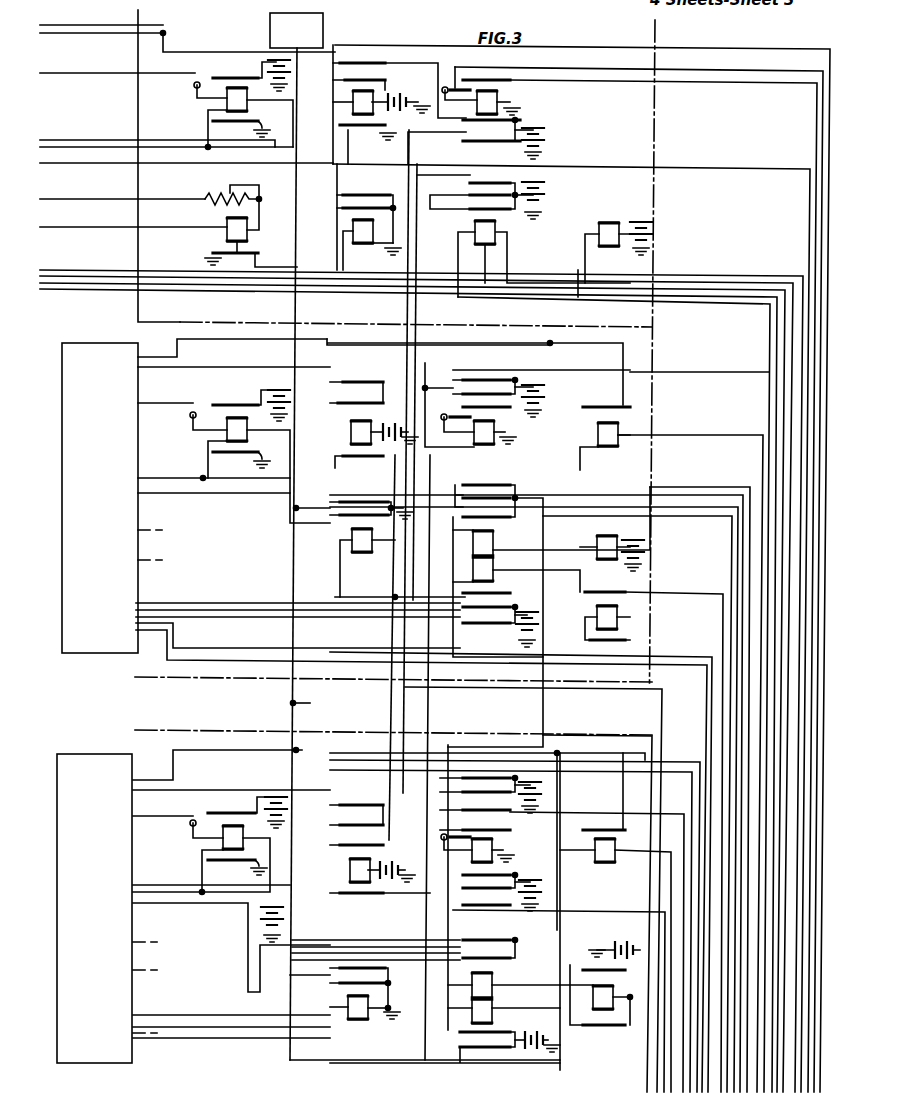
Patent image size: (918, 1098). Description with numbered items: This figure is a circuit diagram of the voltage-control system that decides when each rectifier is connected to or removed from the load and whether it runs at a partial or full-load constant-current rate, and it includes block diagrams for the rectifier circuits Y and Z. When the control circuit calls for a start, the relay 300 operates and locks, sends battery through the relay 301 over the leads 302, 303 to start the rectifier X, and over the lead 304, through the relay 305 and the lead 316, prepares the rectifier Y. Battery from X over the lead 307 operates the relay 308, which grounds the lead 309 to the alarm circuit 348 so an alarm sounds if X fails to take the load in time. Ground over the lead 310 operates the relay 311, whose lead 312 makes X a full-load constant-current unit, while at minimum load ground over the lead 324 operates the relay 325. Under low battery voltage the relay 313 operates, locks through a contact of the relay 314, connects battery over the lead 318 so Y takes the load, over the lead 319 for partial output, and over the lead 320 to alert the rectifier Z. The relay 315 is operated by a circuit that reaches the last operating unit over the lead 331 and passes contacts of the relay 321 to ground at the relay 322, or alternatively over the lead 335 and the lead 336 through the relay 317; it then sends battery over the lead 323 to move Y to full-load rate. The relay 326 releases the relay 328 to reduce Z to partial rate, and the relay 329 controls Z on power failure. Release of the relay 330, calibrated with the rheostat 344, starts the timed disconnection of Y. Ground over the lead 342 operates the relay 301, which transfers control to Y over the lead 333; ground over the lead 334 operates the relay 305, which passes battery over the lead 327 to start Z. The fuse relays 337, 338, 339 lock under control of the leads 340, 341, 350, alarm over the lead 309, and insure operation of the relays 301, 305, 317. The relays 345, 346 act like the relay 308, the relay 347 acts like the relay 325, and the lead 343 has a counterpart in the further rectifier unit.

The relay 300 is at (497, 100).
The relay 301 is at (372, 95).
The lead 302 is at (118, 34).
The lead 303 is at (72, 27).
The lead 304 is at (405, 317).
The relay 305 is at (351, 428).
The lead 307 is at (88, 270).
The relay 308 is at (350, 217).
The lead 309 is at (297, 193).
The lead 310 is at (168, 283).
The relay 311 is at (496, 232).
The lead 312 is at (126, 276).
The relay 313 is at (494, 432).
The relay 314 is at (608, 447).
The relay 315 is at (493, 548).
The lead 316 is at (218, 367).
The relay 317 is at (368, 866).
The lead 318 is at (278, 343).
The lead 319 is at (245, 660).
The lead 320 is at (222, 772).
The relay 321 is at (492, 850).
The relay 322 is at (597, 628).
The lead 323 is at (224, 603).
The lead 324 is at (98, 294).
The relay 325 is at (609, 247).
The relay 326 is at (608, 1012).
The lead 327 is at (395, 652).
The relay 328 is at (445, 1001).
The relay 329 is at (607, 867).
The relay 330 is at (227, 236).
The lead 331 is at (596, 818).
The lead 333 is at (417, 212).
The lead 334 is at (203, 480).
The lead 335 is at (660, 709).
The lead 336 is at (435, 568).
The fuse relay 337 is at (227, 106).
The fuse relay 338 is at (227, 430).
The fuse relay 339 is at (223, 830).
The lead 340 is at (70, 140).
The lead 341 is at (176, 484).
The lead 342 is at (115, 147).
The lead 343 is at (290, 752).
The rheostat 344 is at (226, 192).
The relay 345 is at (356, 1022).
The relay 346 is at (372, 545).
The relay 347 is at (612, 560).
The alarm circuit 348 is at (270, 31).
The lead 350 is at (176, 862).